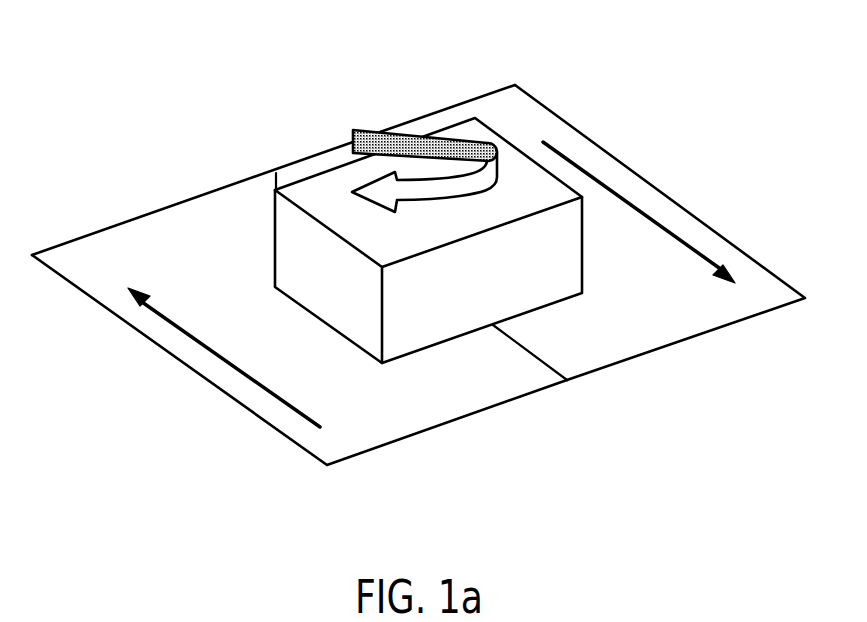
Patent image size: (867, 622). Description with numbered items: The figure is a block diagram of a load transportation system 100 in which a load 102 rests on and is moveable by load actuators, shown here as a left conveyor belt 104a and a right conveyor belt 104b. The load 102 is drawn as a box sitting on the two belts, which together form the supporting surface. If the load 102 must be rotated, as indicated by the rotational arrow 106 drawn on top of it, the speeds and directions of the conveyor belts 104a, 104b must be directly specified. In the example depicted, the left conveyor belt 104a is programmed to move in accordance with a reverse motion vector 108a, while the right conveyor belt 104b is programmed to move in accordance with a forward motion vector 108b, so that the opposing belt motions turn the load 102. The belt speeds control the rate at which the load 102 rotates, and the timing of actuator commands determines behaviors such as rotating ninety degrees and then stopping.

The load transportation system 100 is at (128, 87).
The load 102 is at (452, 340).
The left conveyor belt 104a is at (383, 444).
The right conveyor belt 104b is at (652, 349).
The rotational arrow 106 is at (407, 130).
The reverse motion vector 108a is at (215, 355).
The forward motion vector 108b is at (647, 215).